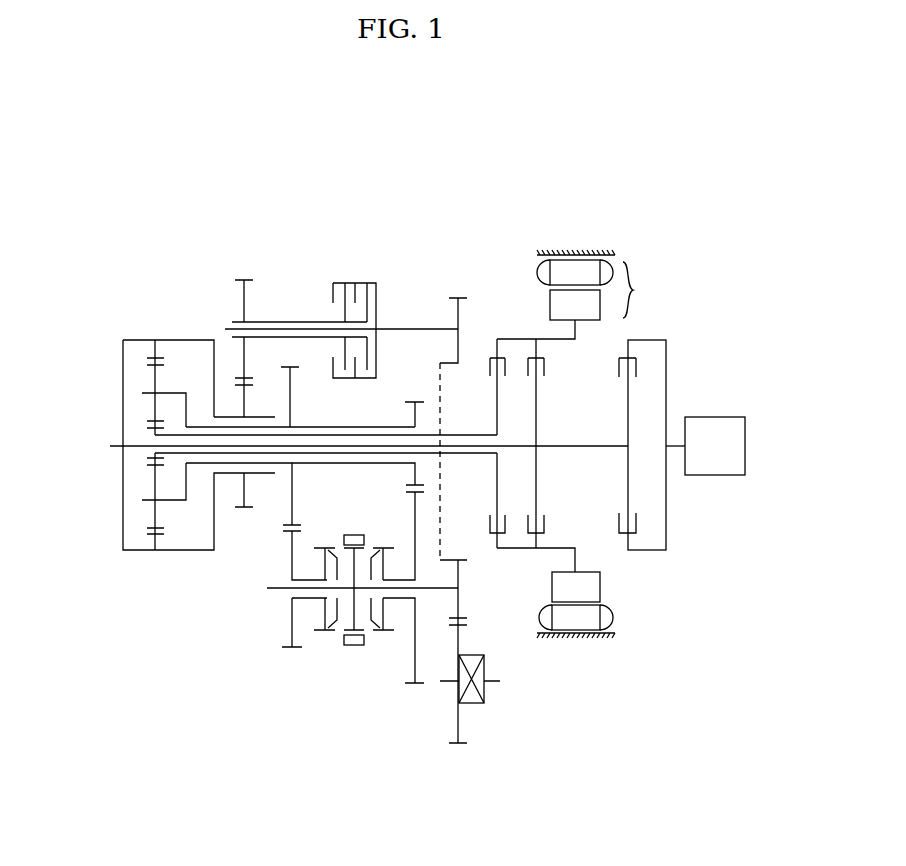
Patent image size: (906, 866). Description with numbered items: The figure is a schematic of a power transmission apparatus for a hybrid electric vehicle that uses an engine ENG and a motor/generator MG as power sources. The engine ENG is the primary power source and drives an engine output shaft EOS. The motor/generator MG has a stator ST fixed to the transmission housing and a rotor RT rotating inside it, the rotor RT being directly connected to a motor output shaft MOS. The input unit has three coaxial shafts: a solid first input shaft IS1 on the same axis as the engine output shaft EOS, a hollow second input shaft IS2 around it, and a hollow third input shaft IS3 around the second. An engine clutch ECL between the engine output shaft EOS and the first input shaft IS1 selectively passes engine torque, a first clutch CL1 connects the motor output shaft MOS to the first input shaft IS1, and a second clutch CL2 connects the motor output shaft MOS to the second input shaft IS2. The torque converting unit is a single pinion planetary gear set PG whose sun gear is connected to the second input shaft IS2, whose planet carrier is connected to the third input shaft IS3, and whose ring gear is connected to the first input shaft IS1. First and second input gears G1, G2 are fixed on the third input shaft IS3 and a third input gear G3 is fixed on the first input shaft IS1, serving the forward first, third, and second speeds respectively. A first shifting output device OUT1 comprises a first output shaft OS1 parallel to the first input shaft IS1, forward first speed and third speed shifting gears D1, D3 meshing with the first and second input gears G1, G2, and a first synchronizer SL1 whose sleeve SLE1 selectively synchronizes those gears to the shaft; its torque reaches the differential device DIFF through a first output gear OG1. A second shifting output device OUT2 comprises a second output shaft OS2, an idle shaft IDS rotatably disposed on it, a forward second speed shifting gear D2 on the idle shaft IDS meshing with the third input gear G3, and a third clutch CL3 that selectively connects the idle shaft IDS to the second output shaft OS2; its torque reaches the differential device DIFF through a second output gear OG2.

The planetary gear set PG is at (178, 540).
The first input shaft IS1 is at (265, 415).
The second input shaft IS2 is at (321, 465).
The third input shaft IS3 is at (357, 465).
The forward first speed shifting gear D1 is at (417, 655).
The forward second speed shifting gear D2 is at (246, 300).
The forward third speed shifting gear D3 is at (290, 625).
The idle shaft IDS is at (307, 321).
The first output shaft OS1 is at (270, 586).
The second output shaft OS2 is at (397, 328).
The first clutch CL1 is at (530, 350).
The second clutch CL2 is at (490, 350).
The third clutch CL3 is at (359, 275).
The first shifting output device OUT1 is at (285, 672).
The second shifting output device OUT2 is at (426, 245).
The first input gear G1 is at (409, 400).
The second input gear G2 is at (287, 381).
The third input gear G3 is at (247, 490).
The first output gear OG1 is at (461, 572).
The second output gear OG2 is at (438, 310).
The stator ST is at (576, 269).
The rotor RT is at (575, 304).
The motor/generator MG is at (642, 290).
The motor output shaft MOS is at (567, 342).
The engine clutch ECL is at (644, 358).
The engine output shaft EOS is at (678, 440).
The engine ENG is at (715, 446).
The first synchronizer SL1 is at (335, 662).
The sleeve SLE1 is at (354, 648).
The differential device DIFF is at (487, 695).